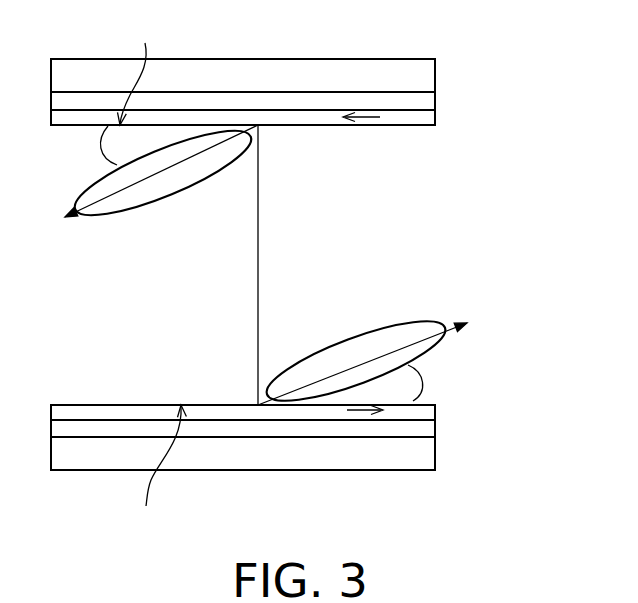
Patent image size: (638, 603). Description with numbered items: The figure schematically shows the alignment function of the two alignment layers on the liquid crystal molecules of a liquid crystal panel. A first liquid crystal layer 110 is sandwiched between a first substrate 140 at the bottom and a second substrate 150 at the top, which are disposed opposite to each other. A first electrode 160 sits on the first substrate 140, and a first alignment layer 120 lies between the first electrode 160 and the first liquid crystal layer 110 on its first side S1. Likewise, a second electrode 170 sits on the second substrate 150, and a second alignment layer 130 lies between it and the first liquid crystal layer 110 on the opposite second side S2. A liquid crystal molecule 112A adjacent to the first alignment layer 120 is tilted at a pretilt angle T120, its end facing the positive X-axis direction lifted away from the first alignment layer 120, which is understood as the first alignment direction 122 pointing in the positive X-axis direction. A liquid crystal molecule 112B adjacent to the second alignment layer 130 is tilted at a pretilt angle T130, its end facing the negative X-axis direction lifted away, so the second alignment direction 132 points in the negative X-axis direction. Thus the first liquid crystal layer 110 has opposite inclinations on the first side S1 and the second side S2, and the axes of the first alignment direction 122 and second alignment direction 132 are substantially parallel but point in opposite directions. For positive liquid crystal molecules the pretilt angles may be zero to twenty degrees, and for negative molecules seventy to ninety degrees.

The first liquid crystal layer 110 is at (457, 173).
The liquid crystal molecule 112A is at (333, 353).
The liquid crystal molecule 112B is at (227, 162).
The first alignment layer 120 is at (430, 408).
The first alignment direction 122 is at (362, 412).
The second alignment layer 130 is at (430, 118).
The second alignment direction 132 is at (368, 117).
The first substrate 140 is at (430, 448).
The second substrate 150 is at (422, 80).
The first electrode 160 is at (430, 423).
The second electrode 170 is at (425, 106).
The first side S1 is at (160, 474).
The second side S2 is at (141, 69).
The pretilt angle T120 is at (444, 378).
The pretilt angle T130 is at (76, 146).